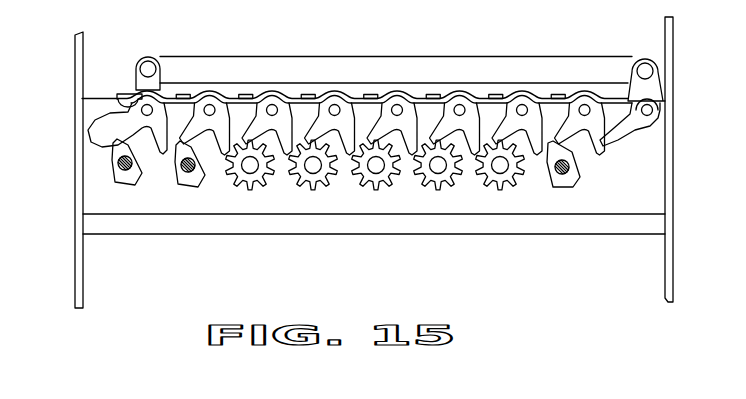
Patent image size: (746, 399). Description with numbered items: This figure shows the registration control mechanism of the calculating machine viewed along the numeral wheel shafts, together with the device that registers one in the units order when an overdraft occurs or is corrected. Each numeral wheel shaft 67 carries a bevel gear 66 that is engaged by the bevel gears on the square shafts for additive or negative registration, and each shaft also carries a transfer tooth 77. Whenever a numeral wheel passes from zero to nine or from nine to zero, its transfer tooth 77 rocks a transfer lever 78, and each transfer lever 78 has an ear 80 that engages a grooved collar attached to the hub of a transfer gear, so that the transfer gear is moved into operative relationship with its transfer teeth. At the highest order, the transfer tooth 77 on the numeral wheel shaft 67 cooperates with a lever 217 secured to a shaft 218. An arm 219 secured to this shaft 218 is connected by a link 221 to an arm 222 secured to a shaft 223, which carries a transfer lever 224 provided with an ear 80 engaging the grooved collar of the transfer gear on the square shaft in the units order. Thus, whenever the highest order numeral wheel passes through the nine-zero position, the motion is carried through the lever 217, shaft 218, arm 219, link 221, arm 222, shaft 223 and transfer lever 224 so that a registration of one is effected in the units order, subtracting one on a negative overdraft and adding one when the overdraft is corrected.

The bevel gear 66 is at (260, 182).
The numeral wheel shaft 67 is at (131, 168).
The transfer tooth 77 is at (118, 150).
The transfer lever 78 is at (523, 97).
The ear 80 is at (492, 95).
The lever 217 is at (100, 130).
The shaft 218 is at (140, 99).
The arm 219 is at (136, 80).
The link 221 is at (262, 60).
The arm 222 is at (652, 89).
The shaft 223 is at (652, 110).
The transfer lever 224 is at (622, 126).